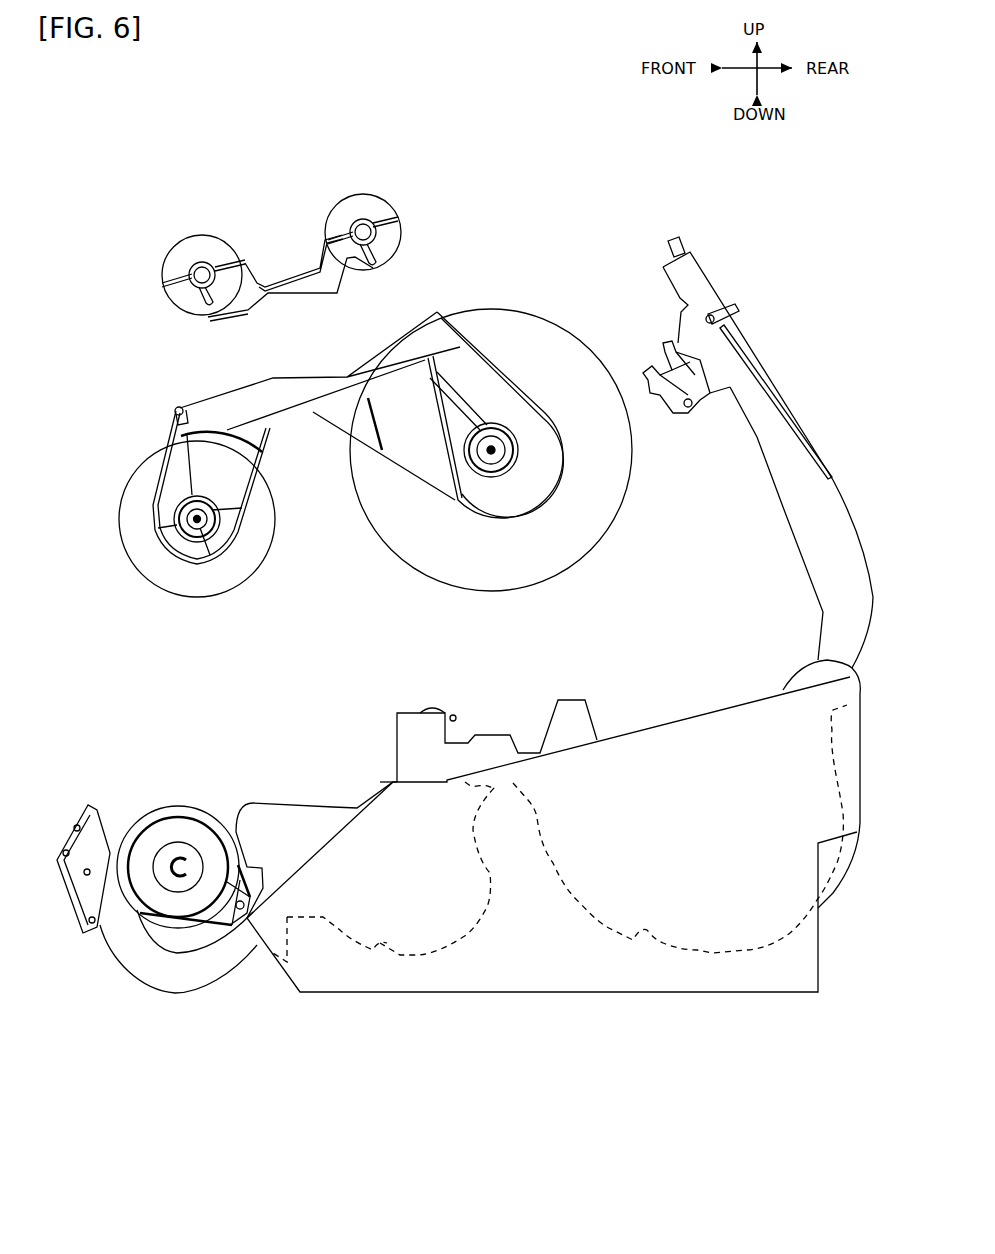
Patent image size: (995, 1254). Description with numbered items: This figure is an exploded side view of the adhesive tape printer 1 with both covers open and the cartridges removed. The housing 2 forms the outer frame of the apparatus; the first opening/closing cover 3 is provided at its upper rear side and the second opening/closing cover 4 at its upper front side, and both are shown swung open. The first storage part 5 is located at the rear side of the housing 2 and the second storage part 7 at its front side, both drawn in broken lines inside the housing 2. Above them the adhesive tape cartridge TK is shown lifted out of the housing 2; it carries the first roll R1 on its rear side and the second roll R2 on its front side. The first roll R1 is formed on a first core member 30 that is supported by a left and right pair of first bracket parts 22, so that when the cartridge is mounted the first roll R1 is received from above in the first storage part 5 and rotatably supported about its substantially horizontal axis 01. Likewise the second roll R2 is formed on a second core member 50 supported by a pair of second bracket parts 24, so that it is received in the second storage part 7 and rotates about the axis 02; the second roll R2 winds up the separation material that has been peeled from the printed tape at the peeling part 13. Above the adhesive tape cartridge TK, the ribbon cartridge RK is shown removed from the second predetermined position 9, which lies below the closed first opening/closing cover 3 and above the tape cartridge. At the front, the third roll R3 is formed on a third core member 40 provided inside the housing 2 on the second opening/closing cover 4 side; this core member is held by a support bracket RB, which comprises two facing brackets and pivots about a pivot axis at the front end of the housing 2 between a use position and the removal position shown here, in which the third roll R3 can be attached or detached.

The ribbon cartridge RK is at (399, 198).
The adhesive tape cartridge TK is at (491, 405).
The first core member 30 is at (491, 450).
The first bracket parts 22 is at (540, 487).
The axis O1 01 is at (495, 450).
The first opening/closing cover 3 is at (768, 357).
The first roll R1 is at (758, 452).
The second roll R2 is at (155, 519).
The second core member 50 is at (197, 514).
The second bracket parts 24 is at (218, 562).
The peeling part 13 is at (177, 410).
The axis O2 02 is at (200, 516).
The adhesive tape printer 1 is at (440, 893).
The housing 2 is at (452, 993).
The second predetermined position 9 is at (500, 716).
The second storage part 7 is at (377, 950).
The first storage part 5 is at (637, 943).
The third roll R3 is at (138, 897).
The second opening/closing cover 4 is at (138, 985).
The third core member 40 is at (175, 805).
The support bracket RB is at (196, 830).